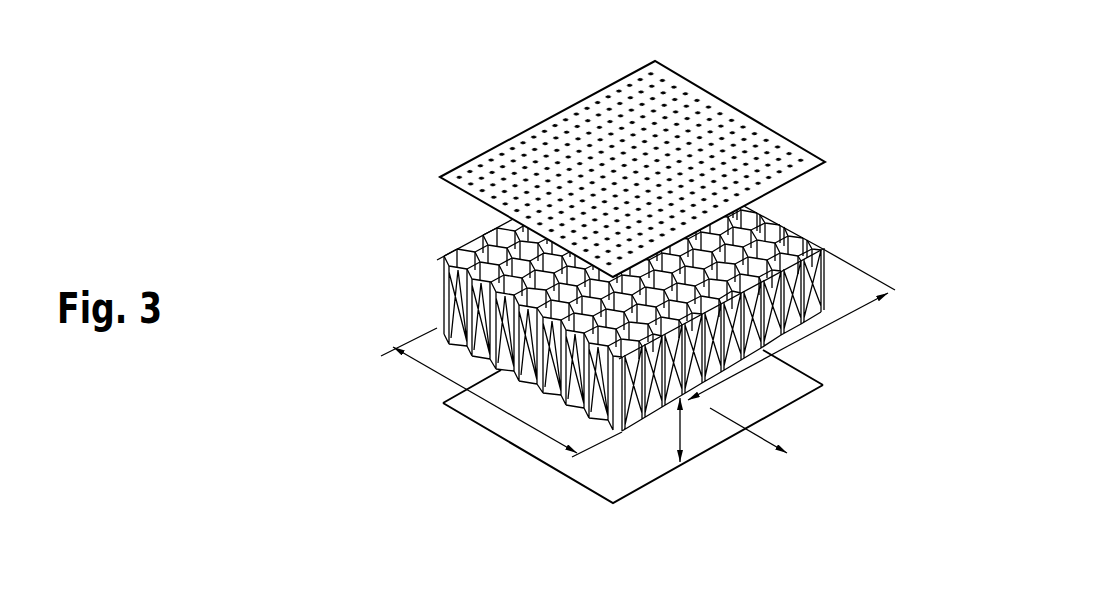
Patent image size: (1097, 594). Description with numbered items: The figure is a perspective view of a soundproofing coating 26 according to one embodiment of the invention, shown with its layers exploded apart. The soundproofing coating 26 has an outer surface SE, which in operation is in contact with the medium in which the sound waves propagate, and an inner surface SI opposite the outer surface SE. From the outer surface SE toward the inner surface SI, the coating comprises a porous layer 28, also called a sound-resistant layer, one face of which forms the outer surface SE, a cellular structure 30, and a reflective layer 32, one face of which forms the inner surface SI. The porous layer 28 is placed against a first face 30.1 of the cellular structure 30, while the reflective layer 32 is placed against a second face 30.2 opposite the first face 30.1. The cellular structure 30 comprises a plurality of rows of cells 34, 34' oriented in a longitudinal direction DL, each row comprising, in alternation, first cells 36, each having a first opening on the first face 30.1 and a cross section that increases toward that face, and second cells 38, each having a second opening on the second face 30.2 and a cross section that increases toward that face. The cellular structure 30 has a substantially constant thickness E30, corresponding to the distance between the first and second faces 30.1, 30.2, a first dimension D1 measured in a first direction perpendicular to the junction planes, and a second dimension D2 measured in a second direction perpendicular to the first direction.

The soundproofing coating 26 is at (323, 173).
The porous layer 28 is at (800, 134).
The outer surface SE is at (688, 140).
The cellular structure 30 is at (838, 270).
The first face 30.1 is at (767, 235).
The second face 30.2 is at (758, 375).
The reflective layer 32 is at (828, 378).
The row of cells 34 is at (412, 218).
The row of cells 34' is at (410, 214).
The first cell 36 is at (468, 280).
The second cell 38 is at (488, 378).
The first dimension D1 is at (791, 324).
The second dimension D2 is at (501, 392).
The thickness E30 is at (706, 430).
The longitudinal direction DL is at (772, 444).
The inner surface SI is at (665, 476).